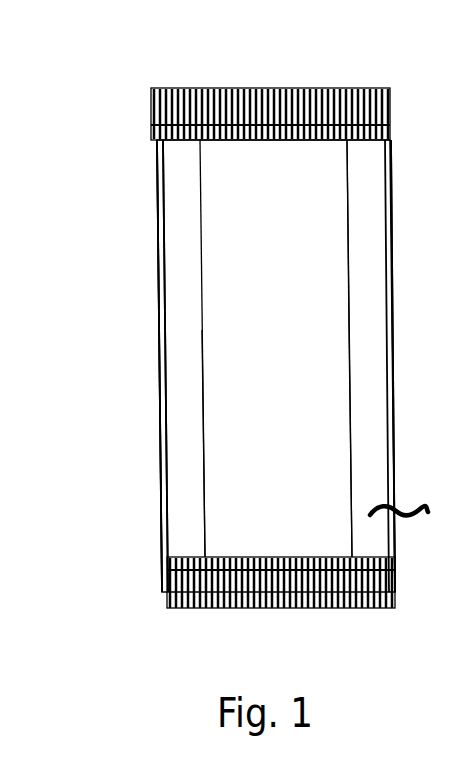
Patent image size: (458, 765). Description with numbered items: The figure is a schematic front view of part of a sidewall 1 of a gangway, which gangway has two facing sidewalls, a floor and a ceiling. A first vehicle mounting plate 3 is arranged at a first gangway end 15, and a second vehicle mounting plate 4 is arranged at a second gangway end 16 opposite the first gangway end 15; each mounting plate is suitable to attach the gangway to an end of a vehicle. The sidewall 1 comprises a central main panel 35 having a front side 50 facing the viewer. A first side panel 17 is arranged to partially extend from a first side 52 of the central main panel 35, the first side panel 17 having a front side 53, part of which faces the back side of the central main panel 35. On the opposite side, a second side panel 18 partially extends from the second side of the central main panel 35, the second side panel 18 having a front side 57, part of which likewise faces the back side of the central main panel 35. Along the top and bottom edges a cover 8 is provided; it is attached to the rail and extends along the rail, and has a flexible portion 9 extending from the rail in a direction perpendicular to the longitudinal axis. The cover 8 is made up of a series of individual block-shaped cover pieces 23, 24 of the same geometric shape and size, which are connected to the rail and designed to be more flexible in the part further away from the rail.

The sidewall 1 is at (412, 68).
The first vehicle mounting plate 3 is at (160, 410).
The second vehicle mounting plate 4 is at (392, 268).
The cover 8 is at (244, 92).
The flexible portion 9 is at (218, 92).
The first gangway end 15 is at (162, 282).
The second gangway end 16 is at (392, 222).
The first side panel 17 is at (180, 323).
The second side panel 18 is at (368, 345).
The cover piece 23 is at (274, 92).
The cover piece 24 is at (173, 92).
The central main panel 35 is at (308, 448).
The front side of the central main panel 50 is at (327, 192).
The first side of the central main panel 52 is at (200, 196).
The front side of the first side panel 53 is at (184, 495).
The front side of the second side panel 57 is at (414, 510).